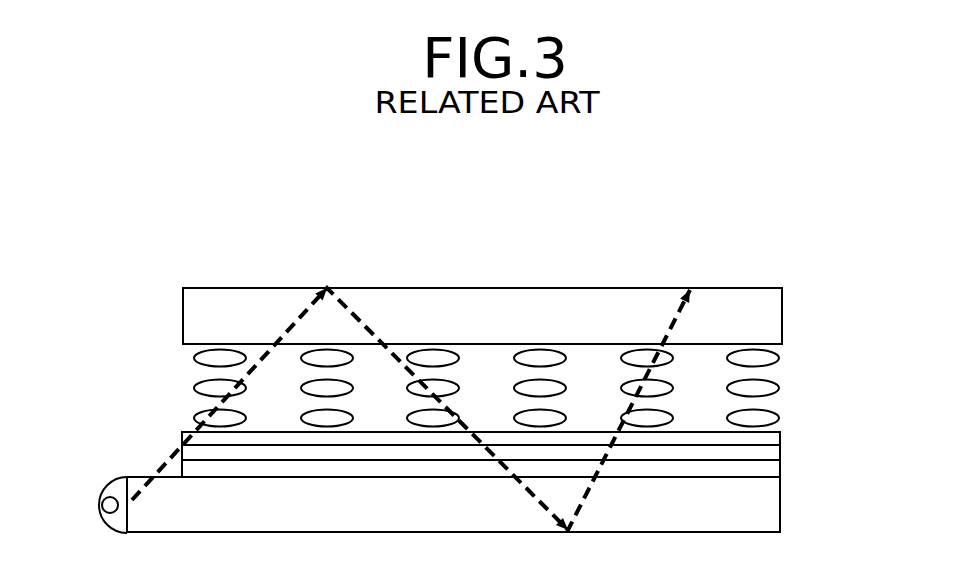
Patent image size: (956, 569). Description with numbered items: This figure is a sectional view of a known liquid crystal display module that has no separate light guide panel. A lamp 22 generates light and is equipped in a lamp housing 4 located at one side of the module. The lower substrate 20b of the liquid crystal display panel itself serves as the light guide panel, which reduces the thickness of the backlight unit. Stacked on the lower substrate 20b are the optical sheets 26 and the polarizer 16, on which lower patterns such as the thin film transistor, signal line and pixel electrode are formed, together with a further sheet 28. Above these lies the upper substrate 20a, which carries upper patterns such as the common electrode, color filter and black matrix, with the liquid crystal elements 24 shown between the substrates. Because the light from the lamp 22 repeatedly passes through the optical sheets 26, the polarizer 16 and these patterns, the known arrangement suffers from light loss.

The upper substrate 20a is at (770, 300).
The liquid crystal molecules 24 is at (779, 358).
The diffuser sheet 28 is at (777, 432).
The polarizer 16 is at (777, 452).
The optical sheets 26 is at (777, 473).
The lower substrate 20b is at (777, 522).
The lamp housing 4 is at (97, 503).
The lamp 22 is at (110, 497).